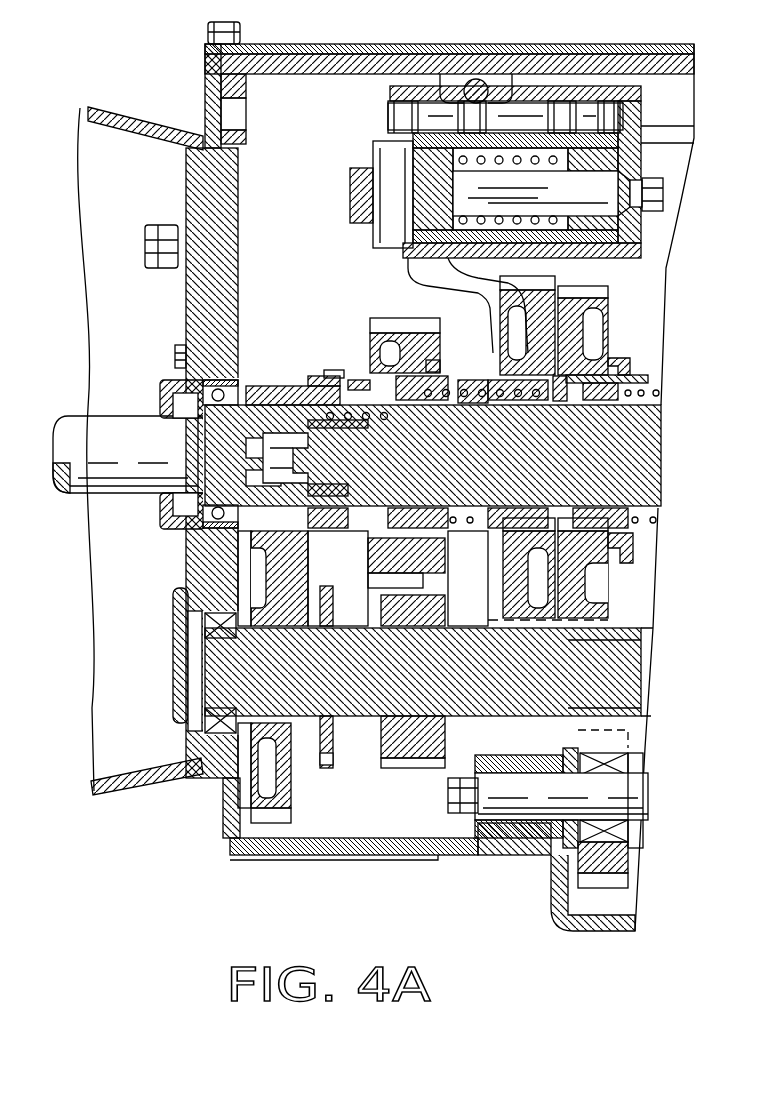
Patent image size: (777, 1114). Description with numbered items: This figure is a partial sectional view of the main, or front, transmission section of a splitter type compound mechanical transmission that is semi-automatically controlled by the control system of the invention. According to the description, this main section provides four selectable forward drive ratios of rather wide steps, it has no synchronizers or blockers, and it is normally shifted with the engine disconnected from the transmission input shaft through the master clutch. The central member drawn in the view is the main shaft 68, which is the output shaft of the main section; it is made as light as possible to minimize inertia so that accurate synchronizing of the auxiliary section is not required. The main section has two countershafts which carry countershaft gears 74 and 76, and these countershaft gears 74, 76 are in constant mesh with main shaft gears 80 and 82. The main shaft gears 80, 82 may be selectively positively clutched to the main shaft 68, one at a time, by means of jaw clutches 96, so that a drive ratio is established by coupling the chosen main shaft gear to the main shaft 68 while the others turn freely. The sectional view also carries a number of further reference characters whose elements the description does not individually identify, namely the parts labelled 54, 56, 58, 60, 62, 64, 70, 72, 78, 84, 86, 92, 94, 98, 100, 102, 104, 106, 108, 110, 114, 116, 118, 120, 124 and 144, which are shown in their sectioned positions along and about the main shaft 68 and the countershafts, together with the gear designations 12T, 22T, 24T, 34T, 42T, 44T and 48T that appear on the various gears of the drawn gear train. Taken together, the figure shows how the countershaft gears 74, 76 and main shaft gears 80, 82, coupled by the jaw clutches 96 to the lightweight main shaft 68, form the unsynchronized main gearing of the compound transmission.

The input shaft 54 is at (75, 408).
The bearing 56 is at (237, 372).
The collar 58 is at (277, 377).
The clutch member 60 is at (249, 439).
The clutch member 62 is at (249, 477).
The countershaft 64 is at (423, 672).
The main shaft 68 is at (640, 452).
The clutch element 70 is at (285, 458).
The gear hub 72 is at (300, 578).
The countershaft gear 74 is at (372, 604).
The countershaft gear 76 is at (485, 625).
The housing wall 78 is at (655, 648).
The main shaft gear 80 is at (365, 325).
The main shaft gear 82 is at (527, 325).
The gear 84 is at (583, 330).
The needle bearing 86 is at (481, 424).
The bearing 92 is at (620, 848).
The spring 94 is at (338, 440).
The jaw clutches 96 is at (432, 483).
The bearing race 98 is at (358, 410).
The needle bearing 100 is at (371, 433).
The bearing 102 is at (252, 520).
The spacer 104 is at (469, 406).
The clutch hub 106 is at (405, 353).
The spacer 108 is at (523, 406).
The needle bearing 110 is at (650, 386).
The spacer 114 is at (609, 408).
The thrust washer 116 is at (622, 372).
The snap ring 118 is at (352, 370).
The snap ring 120 is at (292, 365).
The shift cylinder 124 is at (478, 300).
The bearing housing 144 is at (195, 630).
The 12-tooth gear 12T is at (604, 674).
The 22-tooth gear 22T is at (630, 735).
The 24-tooth gear 24T is at (376, 634).
The 34-tooth gear 34T is at (406, 563).
The 42-tooth gear 42T is at (338, 745).
The 44-tooth gear 44T is at (590, 590).
The 48-tooth gear 48T is at (285, 545).